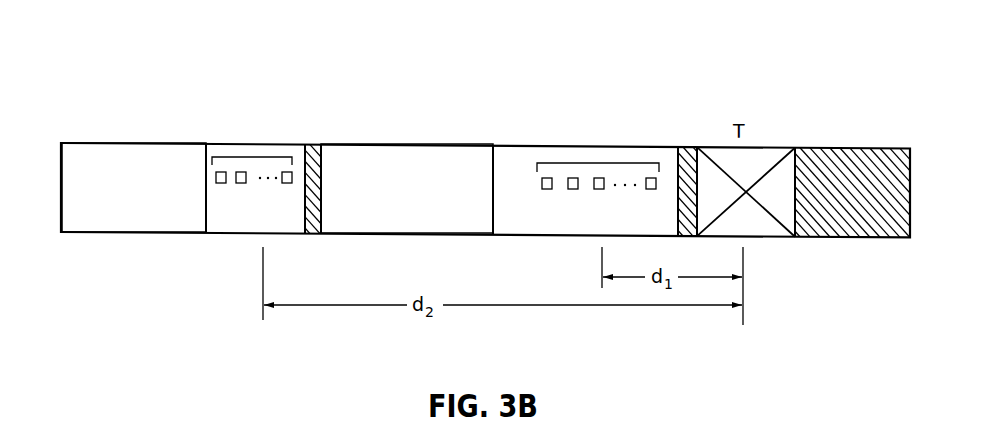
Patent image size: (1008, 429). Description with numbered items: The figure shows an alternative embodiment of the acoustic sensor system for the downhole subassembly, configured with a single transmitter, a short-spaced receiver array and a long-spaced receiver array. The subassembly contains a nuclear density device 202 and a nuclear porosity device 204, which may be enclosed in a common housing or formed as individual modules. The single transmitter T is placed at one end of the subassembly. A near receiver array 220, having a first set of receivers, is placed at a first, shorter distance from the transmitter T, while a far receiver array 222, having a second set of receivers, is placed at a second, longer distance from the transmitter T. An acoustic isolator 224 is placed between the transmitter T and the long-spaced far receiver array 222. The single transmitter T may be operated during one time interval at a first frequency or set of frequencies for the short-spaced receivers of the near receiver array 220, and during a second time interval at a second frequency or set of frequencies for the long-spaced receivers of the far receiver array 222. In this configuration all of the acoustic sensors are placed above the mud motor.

The nuclear density device 202 is at (134, 158).
The nuclear porosity device 204 is at (409, 160).
The near receiver array 220 is at (622, 156).
The far receiver array 222 is at (279, 124).
The acoustic isolator 224 is at (315, 159).